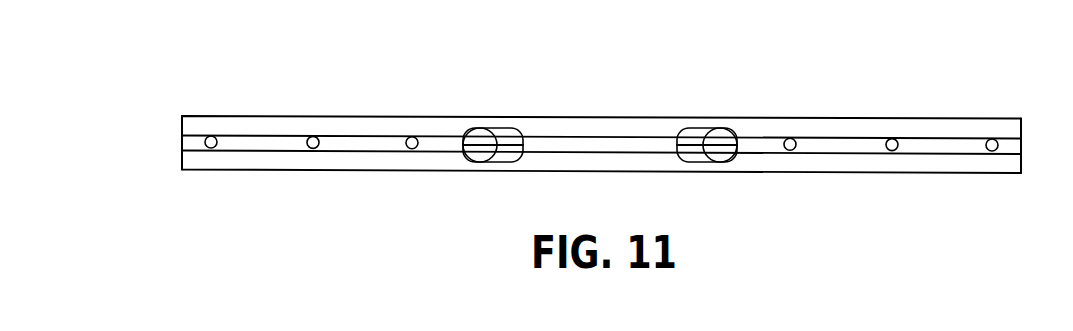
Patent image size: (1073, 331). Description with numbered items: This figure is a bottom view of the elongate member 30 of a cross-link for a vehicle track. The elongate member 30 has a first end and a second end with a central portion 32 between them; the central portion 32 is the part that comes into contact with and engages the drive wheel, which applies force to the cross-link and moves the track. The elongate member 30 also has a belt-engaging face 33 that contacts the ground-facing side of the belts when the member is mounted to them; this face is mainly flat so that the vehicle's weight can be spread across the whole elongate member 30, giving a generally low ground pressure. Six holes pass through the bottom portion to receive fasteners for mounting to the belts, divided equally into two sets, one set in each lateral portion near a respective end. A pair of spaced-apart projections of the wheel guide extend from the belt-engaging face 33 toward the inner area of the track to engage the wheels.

The elongate member 30 is at (815, 85).
The central portion 32 is at (606, 132).
The belt-engaging face 33 is at (264, 135).